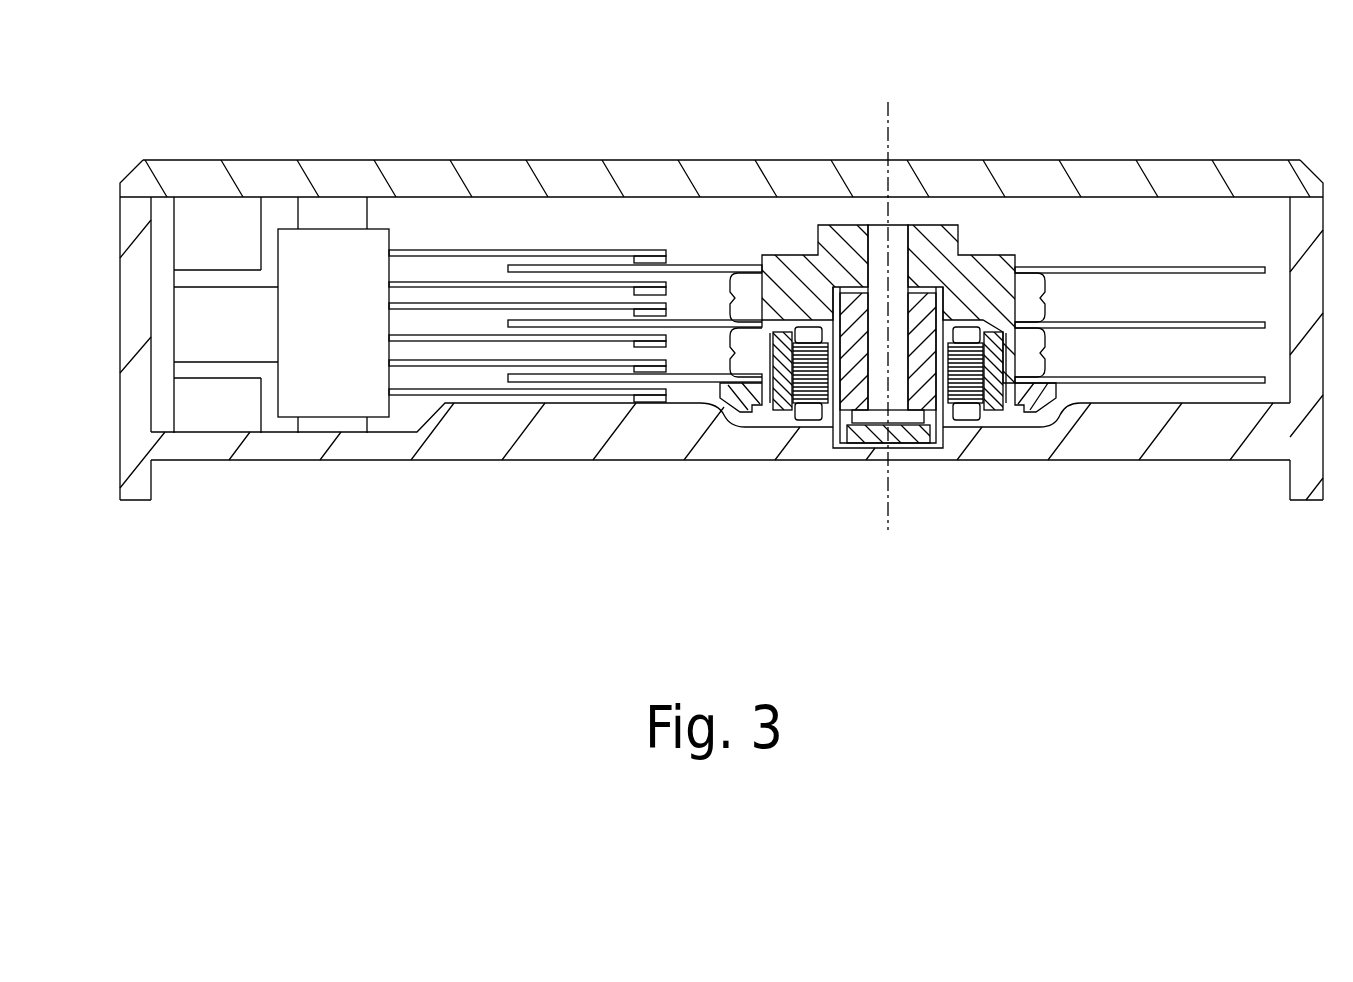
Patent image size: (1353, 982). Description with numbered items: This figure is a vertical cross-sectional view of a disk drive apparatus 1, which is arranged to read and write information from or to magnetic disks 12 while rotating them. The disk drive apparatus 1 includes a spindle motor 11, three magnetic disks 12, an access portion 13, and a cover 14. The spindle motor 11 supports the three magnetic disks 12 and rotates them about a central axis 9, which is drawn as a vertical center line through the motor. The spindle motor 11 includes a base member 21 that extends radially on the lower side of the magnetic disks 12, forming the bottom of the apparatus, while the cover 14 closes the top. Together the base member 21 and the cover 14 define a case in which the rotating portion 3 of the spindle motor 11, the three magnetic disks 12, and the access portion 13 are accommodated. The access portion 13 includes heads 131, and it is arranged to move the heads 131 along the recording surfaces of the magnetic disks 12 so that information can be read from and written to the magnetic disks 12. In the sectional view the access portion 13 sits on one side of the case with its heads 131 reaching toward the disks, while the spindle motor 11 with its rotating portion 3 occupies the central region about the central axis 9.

The disk drive apparatus 1 is at (250, 142).
The rotating portion 3 is at (980, 277).
The central axis 9 is at (887, 122).
The spindle motor 11 is at (942, 220).
The magnetic disks 12 is at (1163, 268).
The access portion 13 is at (525, 240).
The heads 131 is at (650, 255).
The cover 14 is at (800, 177).
The base member 21 is at (1003, 443).